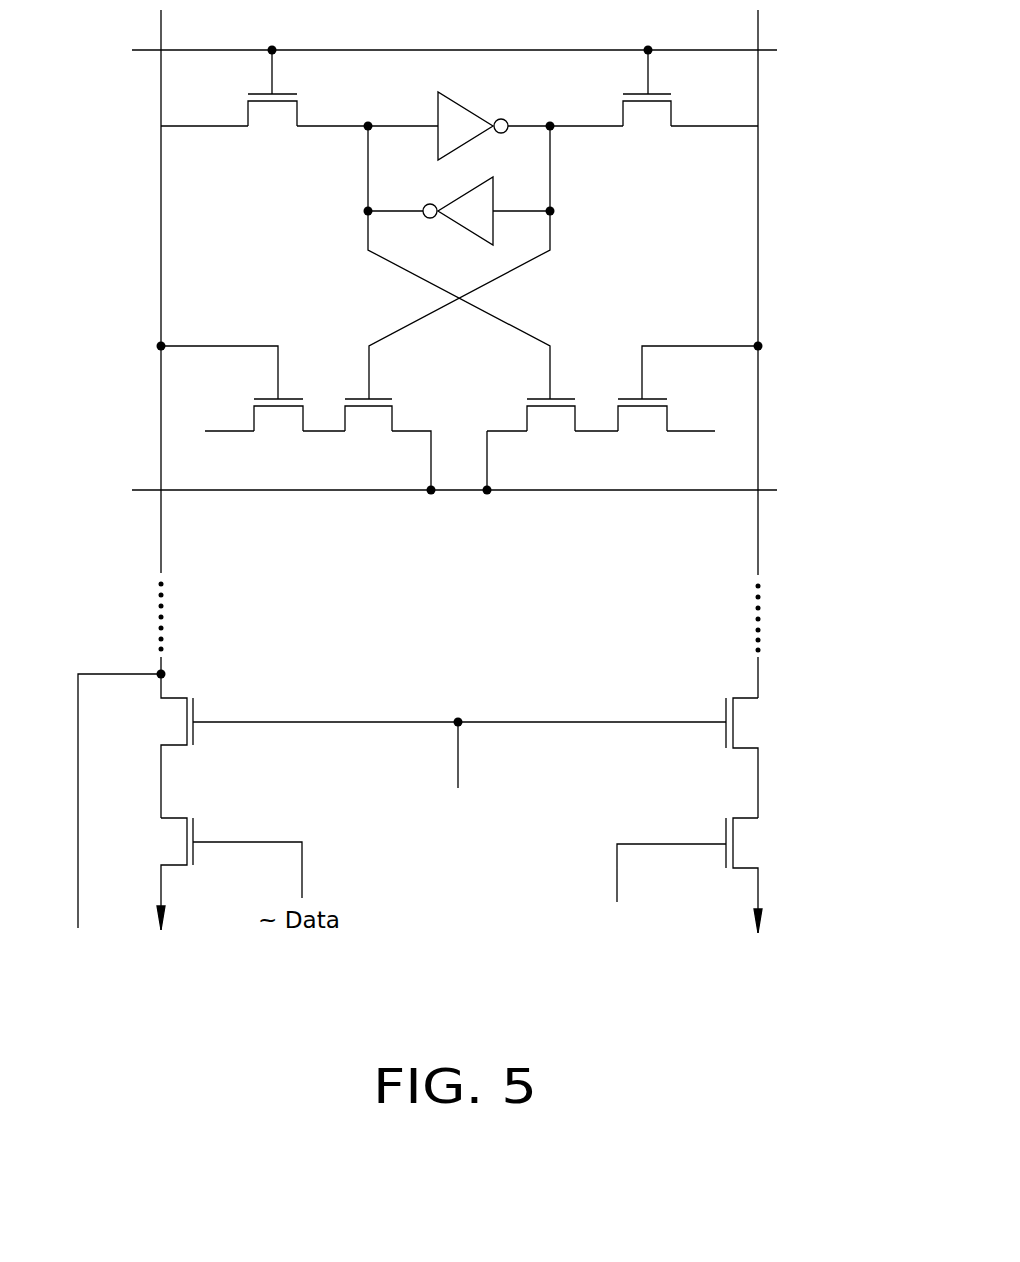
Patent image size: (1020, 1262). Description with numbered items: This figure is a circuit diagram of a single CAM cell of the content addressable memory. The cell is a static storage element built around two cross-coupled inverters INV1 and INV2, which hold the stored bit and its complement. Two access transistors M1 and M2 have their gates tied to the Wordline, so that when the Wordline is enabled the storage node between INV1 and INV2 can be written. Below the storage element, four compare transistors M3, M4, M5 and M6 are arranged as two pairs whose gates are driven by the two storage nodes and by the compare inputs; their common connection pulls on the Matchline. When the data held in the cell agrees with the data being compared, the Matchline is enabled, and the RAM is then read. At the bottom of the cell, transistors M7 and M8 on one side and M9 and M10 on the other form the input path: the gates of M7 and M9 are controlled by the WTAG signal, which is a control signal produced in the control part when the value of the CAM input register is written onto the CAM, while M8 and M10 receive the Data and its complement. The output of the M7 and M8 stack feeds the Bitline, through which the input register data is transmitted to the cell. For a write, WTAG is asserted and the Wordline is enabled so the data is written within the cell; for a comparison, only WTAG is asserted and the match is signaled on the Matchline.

The access transistor M1 is at (299, 100).
The access transistor M2 is at (633, 101).
The compare transistor M3 is at (275, 429).
The compare transistor M4 is at (390, 447).
The compare transistor M5 is at (551, 447).
The compare transistor M6 is at (666, 429).
The write tag transistor M7 is at (159, 746).
The data transistor M8 is at (213, 874).
The write tag transistor M9 is at (757, 758).
The data transistor M10 is at (705, 875).
The inverter INV1 is at (459, 115).
The inverter INV2 is at (459, 221).
The wordline Wordline is at (512, 54).
The matchline Matchline is at (519, 492).
The bitline Bitline is at (106, 819).
The WTAG signal WTAG is at (459, 771).
The data signal Data is at (615, 924).